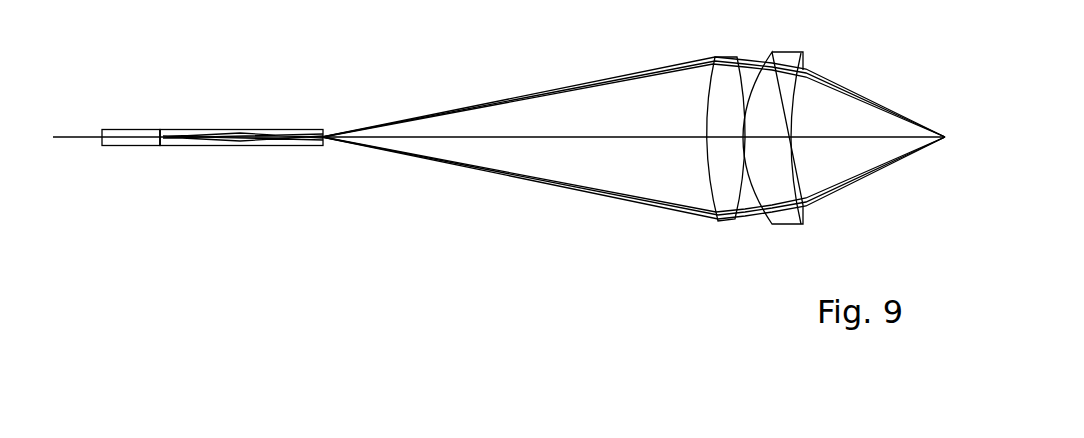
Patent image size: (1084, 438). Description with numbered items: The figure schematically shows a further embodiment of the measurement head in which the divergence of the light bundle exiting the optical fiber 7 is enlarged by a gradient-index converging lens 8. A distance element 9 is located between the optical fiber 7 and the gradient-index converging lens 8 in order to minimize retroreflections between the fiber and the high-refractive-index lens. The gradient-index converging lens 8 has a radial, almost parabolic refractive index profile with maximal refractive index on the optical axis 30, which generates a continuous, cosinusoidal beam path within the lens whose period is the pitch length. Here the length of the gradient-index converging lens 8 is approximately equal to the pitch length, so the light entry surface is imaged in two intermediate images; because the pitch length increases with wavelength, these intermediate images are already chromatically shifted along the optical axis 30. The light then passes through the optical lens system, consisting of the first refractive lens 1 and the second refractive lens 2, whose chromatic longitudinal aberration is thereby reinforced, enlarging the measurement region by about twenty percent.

The first refractive lens 1 is at (722, 80).
The second refractive lens 2 is at (778, 82).
The optical fiber 7 is at (133, 132).
The gradient-index converging lens 8 is at (238, 130).
The distance element 9 is at (163, 132).
The optical axis 30 is at (607, 140).